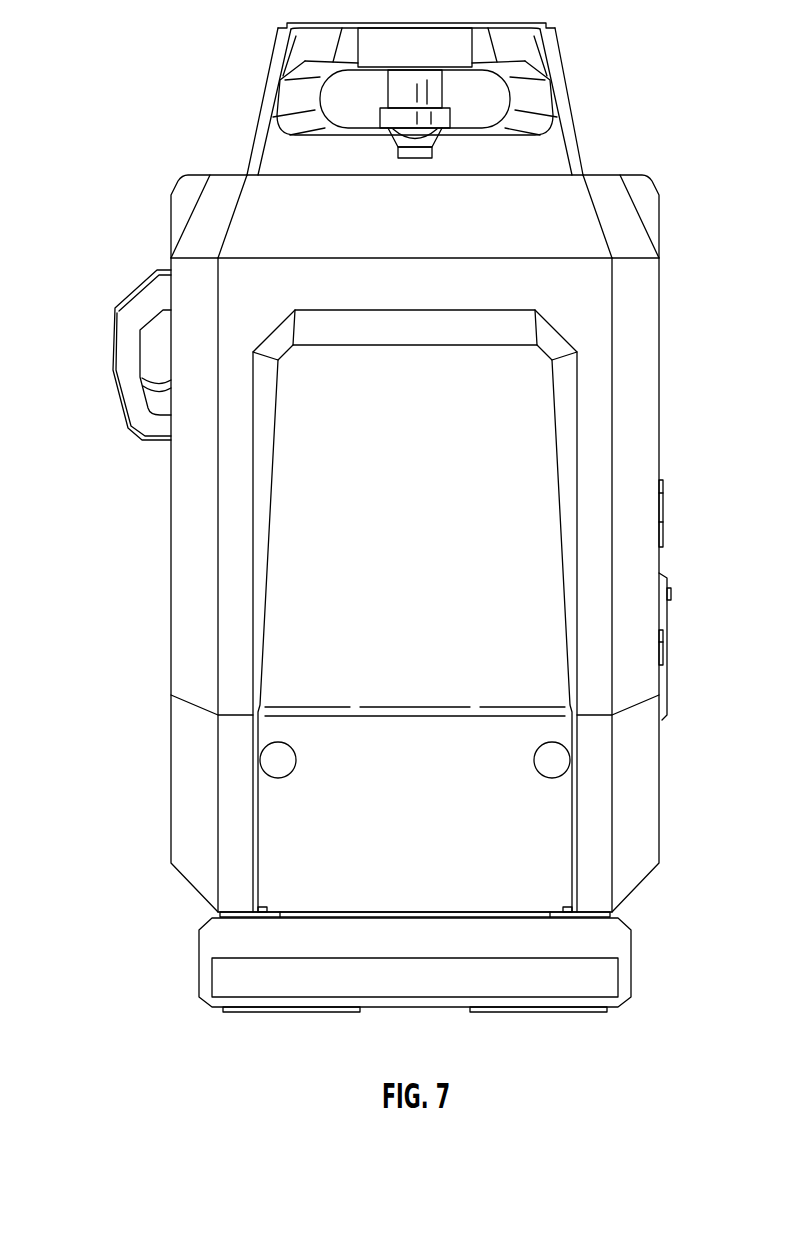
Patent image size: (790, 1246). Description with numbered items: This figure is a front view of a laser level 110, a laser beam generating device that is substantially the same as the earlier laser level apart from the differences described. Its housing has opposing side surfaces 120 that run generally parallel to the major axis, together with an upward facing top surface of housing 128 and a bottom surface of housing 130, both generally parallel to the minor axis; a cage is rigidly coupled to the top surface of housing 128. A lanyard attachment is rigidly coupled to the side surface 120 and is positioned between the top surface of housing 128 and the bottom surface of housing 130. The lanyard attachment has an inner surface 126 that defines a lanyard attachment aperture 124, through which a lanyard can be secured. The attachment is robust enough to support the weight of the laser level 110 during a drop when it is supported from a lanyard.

The laser level 110 is at (198, 50).
The side surface 120 is at (171, 578).
The lanyard attachment aperture 124 is at (155, 357).
The inner surface 126 is at (142, 330).
The top surface of housing 128 is at (632, 176).
The bottom surface of housing 130 is at (222, 1008).